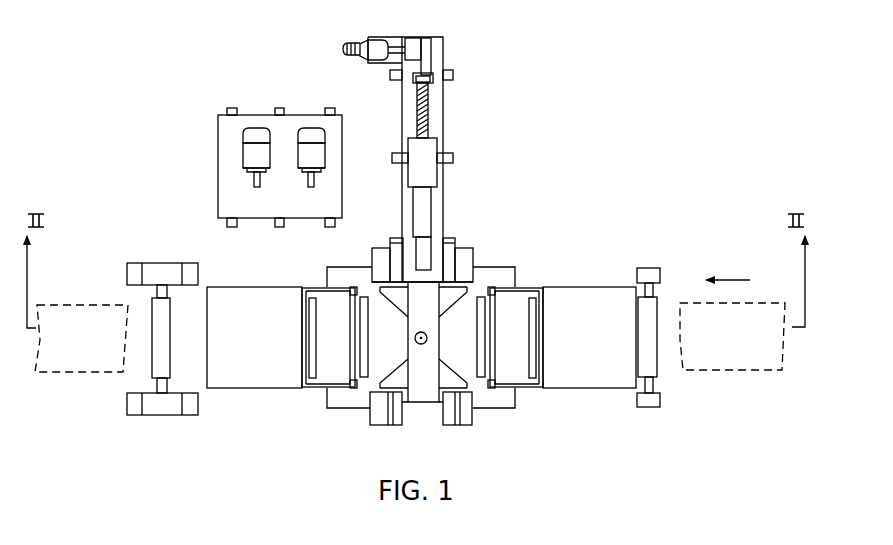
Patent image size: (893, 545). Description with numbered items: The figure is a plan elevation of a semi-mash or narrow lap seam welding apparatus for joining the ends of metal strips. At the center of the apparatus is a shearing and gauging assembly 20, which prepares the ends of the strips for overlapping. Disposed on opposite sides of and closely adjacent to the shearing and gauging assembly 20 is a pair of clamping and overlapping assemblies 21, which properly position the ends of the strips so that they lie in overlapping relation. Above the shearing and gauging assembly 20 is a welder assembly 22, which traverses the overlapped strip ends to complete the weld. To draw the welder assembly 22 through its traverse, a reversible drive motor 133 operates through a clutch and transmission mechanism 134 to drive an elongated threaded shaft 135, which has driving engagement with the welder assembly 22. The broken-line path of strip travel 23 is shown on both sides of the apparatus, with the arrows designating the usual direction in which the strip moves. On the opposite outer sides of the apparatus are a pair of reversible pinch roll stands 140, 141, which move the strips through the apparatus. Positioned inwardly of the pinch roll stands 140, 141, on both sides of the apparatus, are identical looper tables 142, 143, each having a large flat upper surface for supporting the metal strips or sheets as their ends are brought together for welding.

The shearing and gauging assembly 20 is at (429, 322).
The clamping and overlapping assemblies 21 is at (386, 362).
The welder assembly 22 is at (457, 172).
The path of strip travel 23 is at (87, 322).
The reversible drive motor 133 is at (369, 37).
The clutch and transmission mechanism 134 is at (415, 38).
The elongated threaded shaft 135 is at (424, 105).
The reversible pinch roll stand 140 is at (152, 272).
The reversible pinch roll stand 141 is at (648, 273).
The looper table 142 is at (260, 298).
The looper table 143 is at (582, 297).